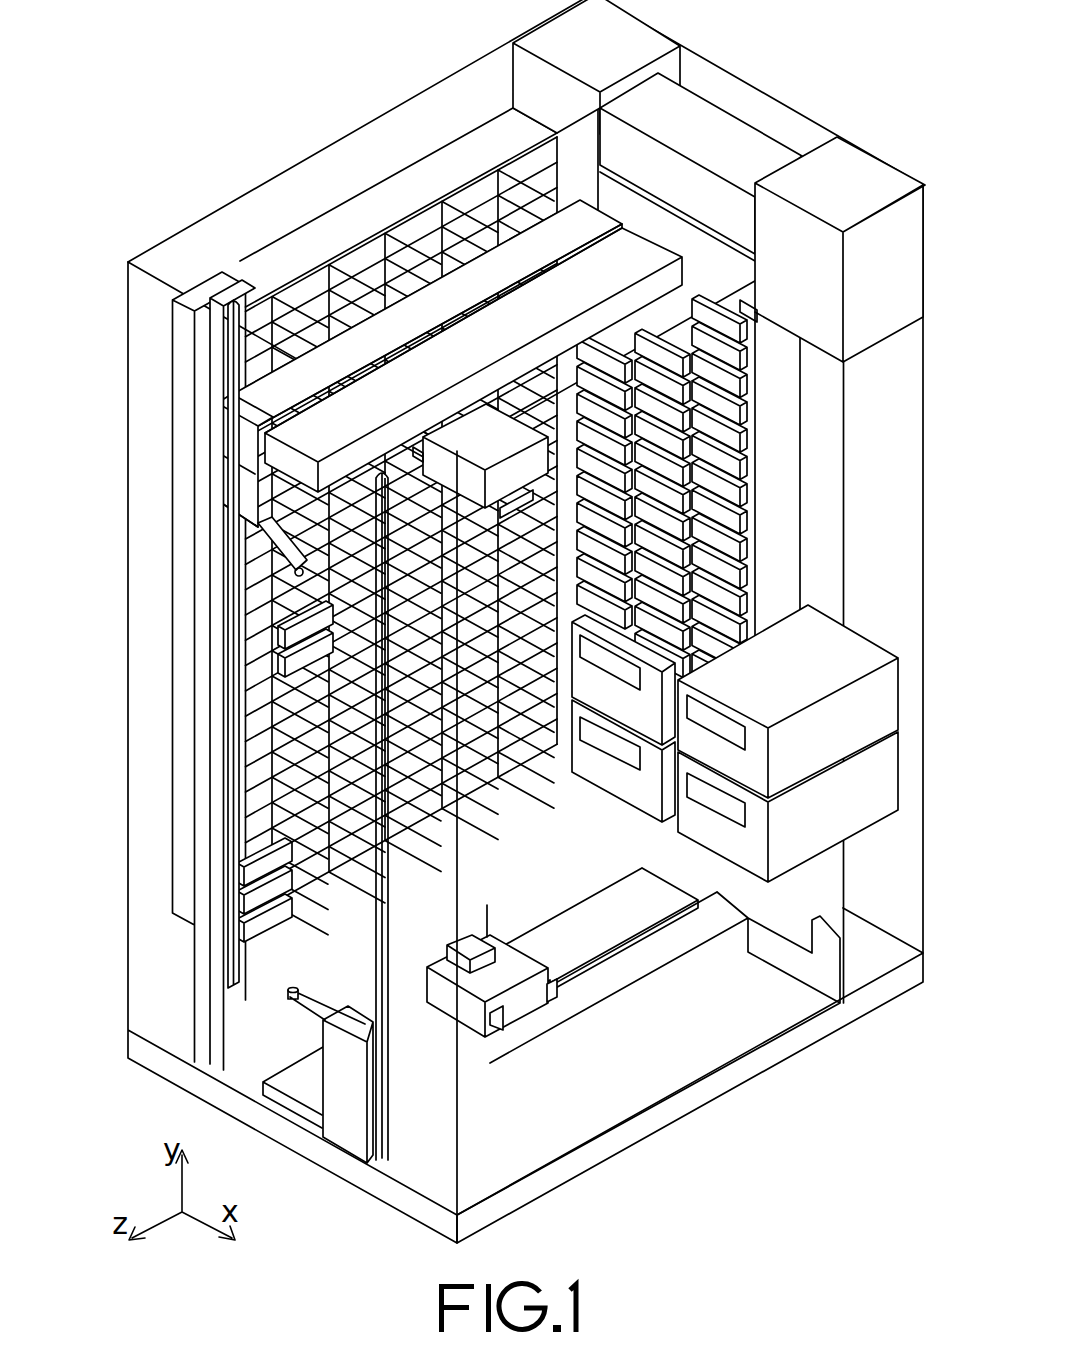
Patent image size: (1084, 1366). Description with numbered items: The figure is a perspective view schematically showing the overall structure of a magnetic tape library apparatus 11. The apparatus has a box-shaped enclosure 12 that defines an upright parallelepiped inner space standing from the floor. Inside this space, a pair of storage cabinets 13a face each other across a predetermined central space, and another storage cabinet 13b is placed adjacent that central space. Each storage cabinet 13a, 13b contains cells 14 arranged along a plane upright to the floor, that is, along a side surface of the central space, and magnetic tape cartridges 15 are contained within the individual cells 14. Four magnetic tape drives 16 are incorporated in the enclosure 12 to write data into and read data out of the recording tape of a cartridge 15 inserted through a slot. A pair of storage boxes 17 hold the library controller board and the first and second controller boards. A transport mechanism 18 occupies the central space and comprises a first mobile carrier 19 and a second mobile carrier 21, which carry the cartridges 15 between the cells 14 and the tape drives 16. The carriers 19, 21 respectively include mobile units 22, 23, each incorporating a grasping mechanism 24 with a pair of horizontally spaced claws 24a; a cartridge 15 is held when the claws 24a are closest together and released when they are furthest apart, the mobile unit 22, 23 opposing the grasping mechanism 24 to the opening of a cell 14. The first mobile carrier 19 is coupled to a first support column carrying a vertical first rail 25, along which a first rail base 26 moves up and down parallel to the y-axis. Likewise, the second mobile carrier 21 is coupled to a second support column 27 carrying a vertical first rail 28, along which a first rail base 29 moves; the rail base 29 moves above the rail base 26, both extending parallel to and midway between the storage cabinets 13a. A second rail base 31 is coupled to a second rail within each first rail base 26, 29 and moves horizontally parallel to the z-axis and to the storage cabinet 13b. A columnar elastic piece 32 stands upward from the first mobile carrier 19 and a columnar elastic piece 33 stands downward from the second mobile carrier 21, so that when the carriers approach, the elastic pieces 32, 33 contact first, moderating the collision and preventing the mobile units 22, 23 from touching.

The magnetic tape library apparatus 11 is at (284, 126).
The enclosure 12 is at (757, 98).
The storage cabinet 13a is at (275, 252).
The storage cabinet 13b is at (790, 425).
The cell 14 is at (770, 368).
The magnetic tape cartridge 15 is at (737, 318).
The magnetic tape drive 16 is at (866, 648).
The storage box 17 is at (548, 40).
The transport mechanism 18 is at (203, 523).
The first mobile carrier 19 is at (335, 1160).
The second mobile carrier 21 is at (208, 426).
The mobile unit 22 is at (530, 968).
The mobile unit 23 is at (523, 467).
The grasping mechanism 24 is at (403, 466).
The claw 24a is at (548, 990).
The first rail 25 is at (393, 1153).
The first rail base 26 is at (278, 1106).
The second support column 27 is at (200, 1055).
The first rail 28 is at (225, 973).
The first rail base 29 is at (230, 475).
The second rail base 31 is at (485, 410).
The elastic piece 32 is at (297, 1004).
The elastic piece 33 is at (268, 548).